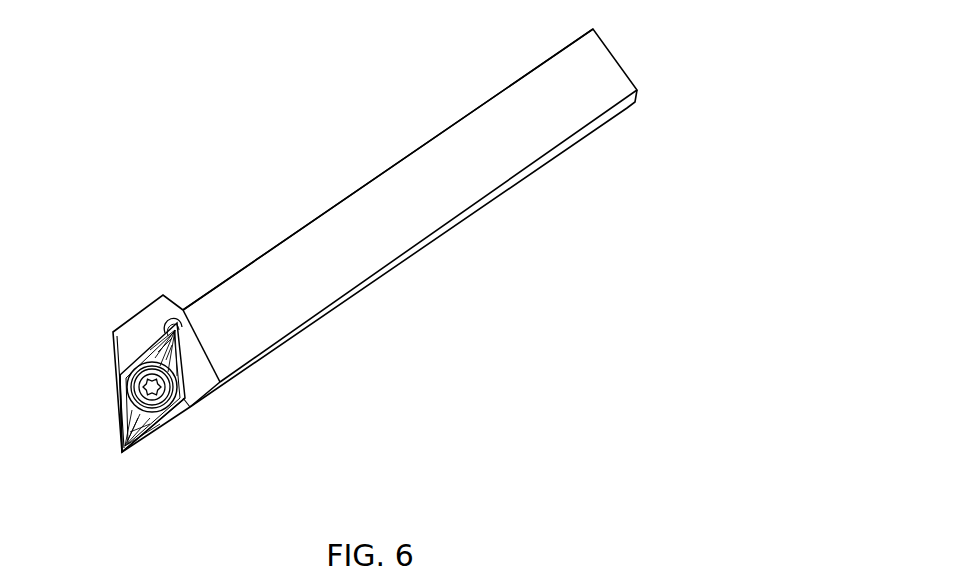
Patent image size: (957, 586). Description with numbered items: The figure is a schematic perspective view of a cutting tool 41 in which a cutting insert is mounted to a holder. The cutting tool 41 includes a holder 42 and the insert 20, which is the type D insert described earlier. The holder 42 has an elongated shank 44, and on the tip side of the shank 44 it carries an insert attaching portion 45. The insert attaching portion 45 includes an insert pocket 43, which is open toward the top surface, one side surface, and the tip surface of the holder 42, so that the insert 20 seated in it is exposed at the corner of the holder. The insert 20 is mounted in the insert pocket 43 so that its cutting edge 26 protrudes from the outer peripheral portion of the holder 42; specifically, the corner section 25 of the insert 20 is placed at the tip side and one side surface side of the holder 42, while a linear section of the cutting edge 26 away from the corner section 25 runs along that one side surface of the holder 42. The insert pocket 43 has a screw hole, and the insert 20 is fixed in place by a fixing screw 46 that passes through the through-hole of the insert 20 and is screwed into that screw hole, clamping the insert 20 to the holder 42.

The cutting tool 41 is at (330, 108).
The holder 42 is at (428, 240).
The insert pocket 43 is at (128, 386).
The shank 44 is at (260, 282).
The insert attaching portion 45 is at (207, 372).
The fixing screw 46 is at (150, 367).
The insert 20 is at (119, 408).
The corner section 25 is at (118, 443).
The cutting edge 26 is at (134, 455).